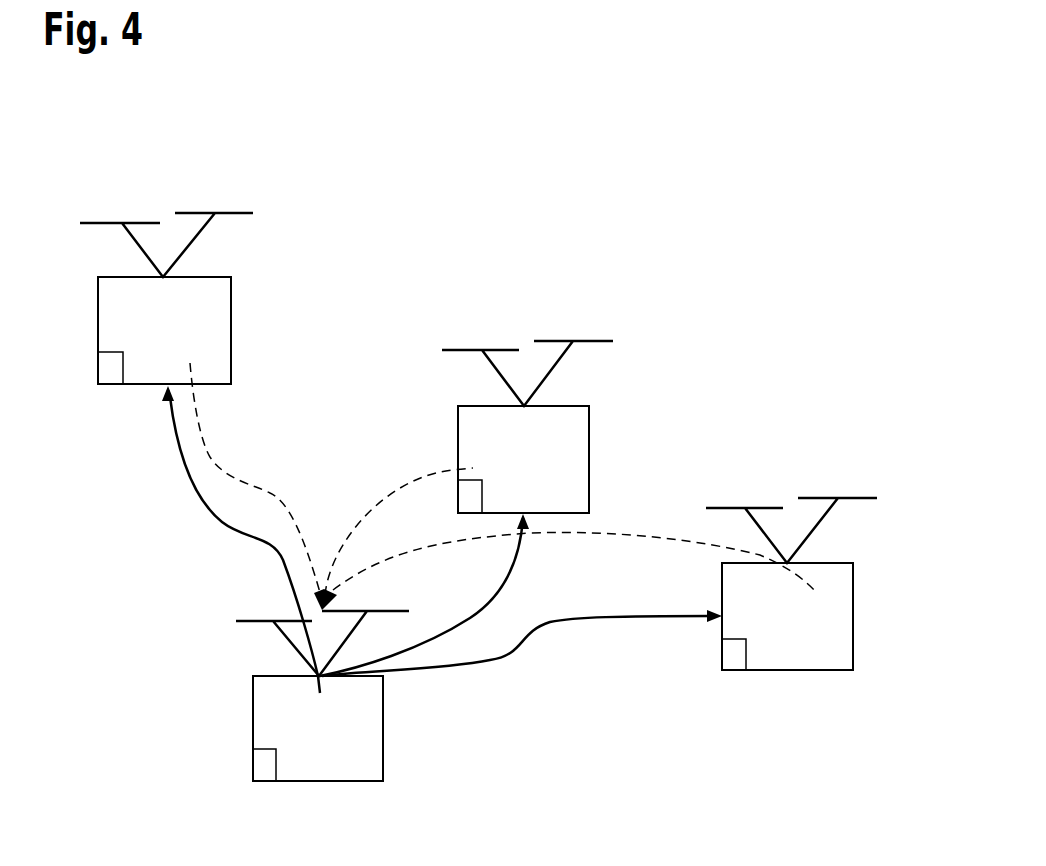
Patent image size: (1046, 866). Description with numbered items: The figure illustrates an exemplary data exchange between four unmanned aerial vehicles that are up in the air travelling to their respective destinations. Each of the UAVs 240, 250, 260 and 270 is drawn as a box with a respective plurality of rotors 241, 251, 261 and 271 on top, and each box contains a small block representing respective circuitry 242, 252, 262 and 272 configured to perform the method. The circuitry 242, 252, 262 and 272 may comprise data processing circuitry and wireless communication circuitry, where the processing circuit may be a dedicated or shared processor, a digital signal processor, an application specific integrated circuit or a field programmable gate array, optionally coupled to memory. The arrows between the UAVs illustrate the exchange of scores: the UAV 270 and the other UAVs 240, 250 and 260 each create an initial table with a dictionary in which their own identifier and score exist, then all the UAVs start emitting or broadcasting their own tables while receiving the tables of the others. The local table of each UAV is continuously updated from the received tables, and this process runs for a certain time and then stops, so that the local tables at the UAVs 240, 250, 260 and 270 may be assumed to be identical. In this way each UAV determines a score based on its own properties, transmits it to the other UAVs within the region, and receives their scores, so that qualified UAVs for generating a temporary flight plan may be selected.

The UAV 240 is at (231, 328).
The plurality of rotors 241 is at (233, 213).
The circuitry 242 is at (123, 369).
The UAV 250 is at (589, 457).
The plurality of rotors 251 is at (593, 341).
The circuitry 252 is at (482, 497).
The UAV 260 is at (853, 615).
The plurality of rotors 261 is at (857, 498).
The circuitry 262 is at (746, 655).
The UAV 270 is at (383, 725).
The plurality of rotors 271 is at (255, 620).
The circuitry 272 is at (276, 768).